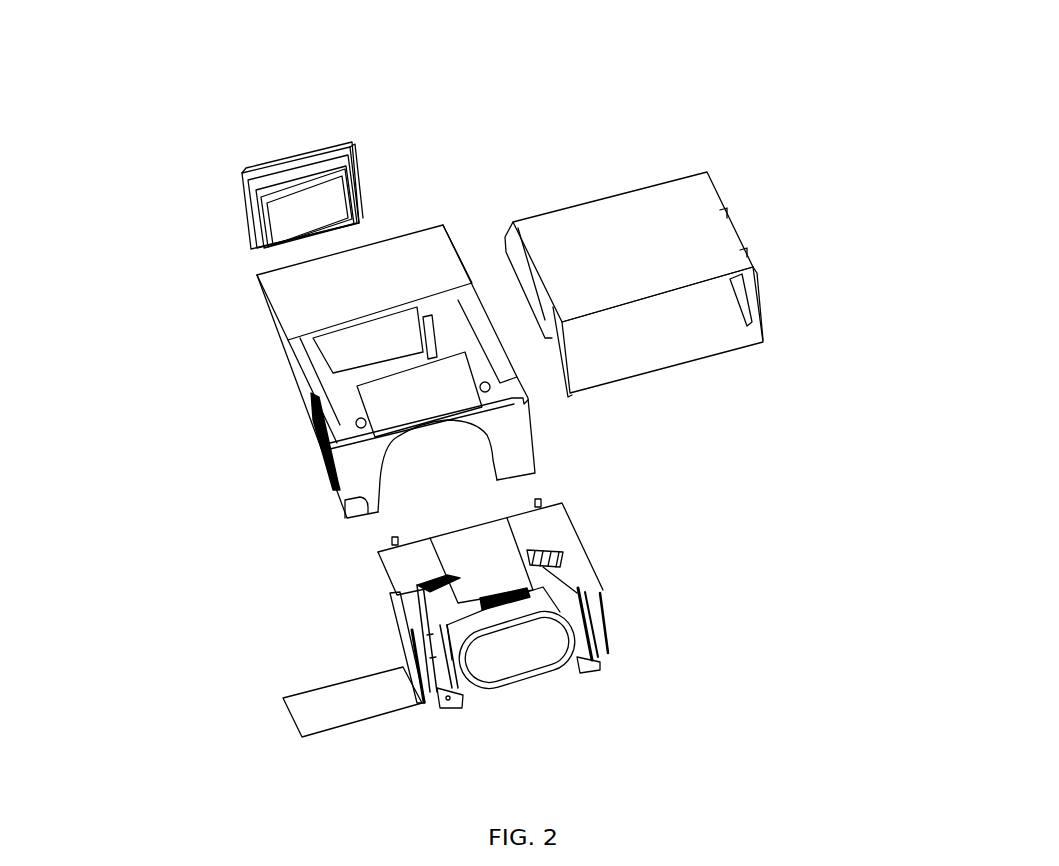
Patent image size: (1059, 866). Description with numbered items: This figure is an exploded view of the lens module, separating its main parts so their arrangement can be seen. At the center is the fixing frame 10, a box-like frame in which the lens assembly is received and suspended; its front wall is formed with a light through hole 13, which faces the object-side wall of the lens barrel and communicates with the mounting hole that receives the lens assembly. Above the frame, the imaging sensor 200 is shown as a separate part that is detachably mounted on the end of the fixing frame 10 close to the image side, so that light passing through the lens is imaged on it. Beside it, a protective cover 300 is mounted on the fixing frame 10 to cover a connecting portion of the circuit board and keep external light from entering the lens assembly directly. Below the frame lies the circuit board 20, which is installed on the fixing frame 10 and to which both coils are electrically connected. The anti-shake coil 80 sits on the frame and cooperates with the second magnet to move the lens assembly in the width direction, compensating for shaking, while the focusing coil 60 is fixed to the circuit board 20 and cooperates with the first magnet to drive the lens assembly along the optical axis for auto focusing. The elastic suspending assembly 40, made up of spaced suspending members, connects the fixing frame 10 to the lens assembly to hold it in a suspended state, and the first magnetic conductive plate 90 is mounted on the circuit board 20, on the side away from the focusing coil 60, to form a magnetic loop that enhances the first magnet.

The imaging sensor 200 is at (328, 146).
The protective cover 300 is at (652, 208).
The fixing frame 10 is at (346, 395).
The light through hole 13 is at (385, 473).
The circuit board 20 is at (557, 527).
The anti-shake coil 80 is at (565, 556).
The focusing coil 60 is at (603, 625).
The elastic suspending assembly 40 is at (605, 643).
The first magnetic conductive plate 90 is at (405, 647).